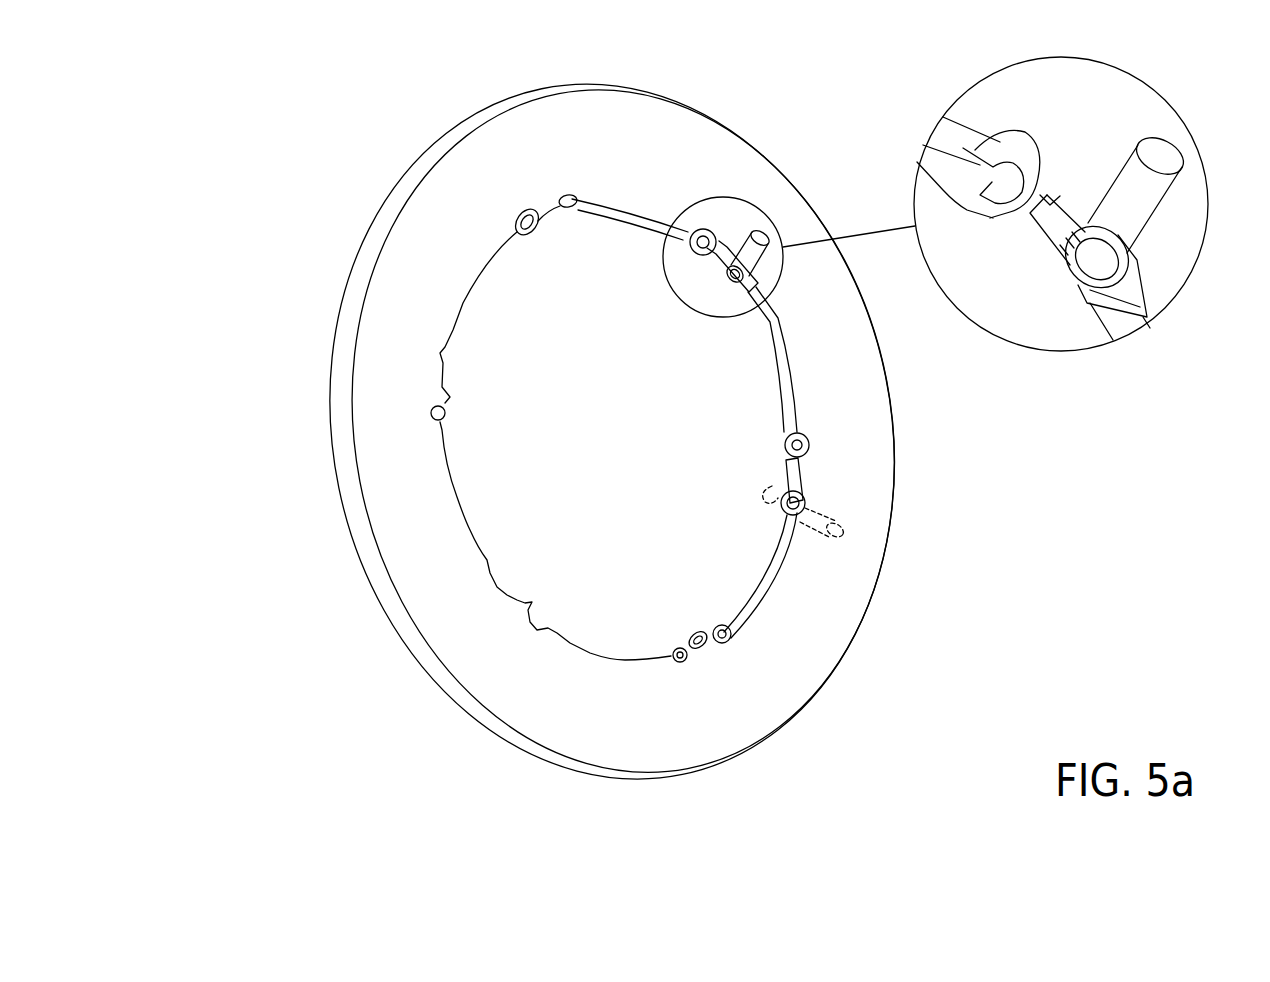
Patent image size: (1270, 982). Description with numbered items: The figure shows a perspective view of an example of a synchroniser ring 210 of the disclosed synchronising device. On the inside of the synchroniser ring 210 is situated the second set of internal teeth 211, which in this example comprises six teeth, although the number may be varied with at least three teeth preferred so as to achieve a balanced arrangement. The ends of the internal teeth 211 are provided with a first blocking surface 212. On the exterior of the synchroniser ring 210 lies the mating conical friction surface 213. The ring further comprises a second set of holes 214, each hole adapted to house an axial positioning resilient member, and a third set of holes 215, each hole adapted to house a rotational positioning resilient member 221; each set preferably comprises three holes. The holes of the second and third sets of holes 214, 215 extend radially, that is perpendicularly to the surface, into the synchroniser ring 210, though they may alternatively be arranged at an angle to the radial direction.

The synchroniser ring 210 is at (300, 138).
The second set of internal teeth 211 is at (990, 215).
The first blocking surface 212 is at (975, 195).
The mating conical friction surface 213 is at (346, 483).
The second set of holes 214 is at (466, 362).
The third set of holes 215 is at (573, 222).
The rotational positioning resilient member 221 is at (768, 481).